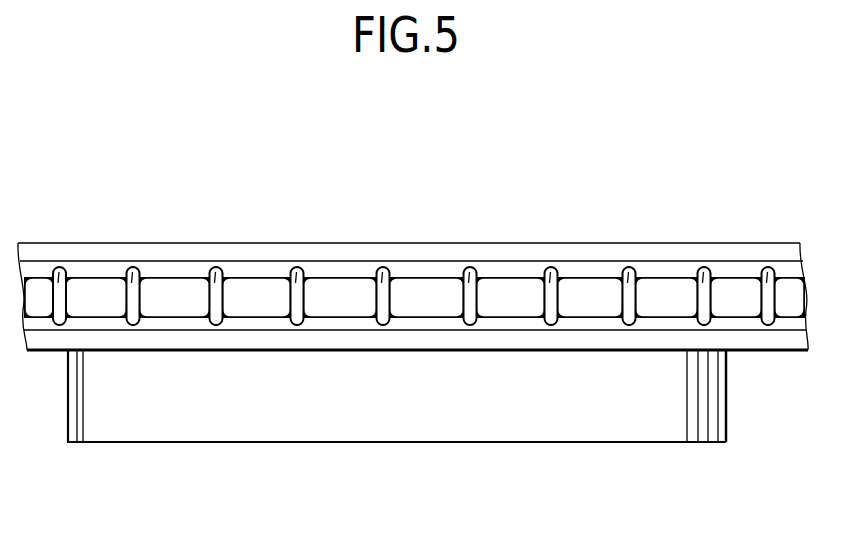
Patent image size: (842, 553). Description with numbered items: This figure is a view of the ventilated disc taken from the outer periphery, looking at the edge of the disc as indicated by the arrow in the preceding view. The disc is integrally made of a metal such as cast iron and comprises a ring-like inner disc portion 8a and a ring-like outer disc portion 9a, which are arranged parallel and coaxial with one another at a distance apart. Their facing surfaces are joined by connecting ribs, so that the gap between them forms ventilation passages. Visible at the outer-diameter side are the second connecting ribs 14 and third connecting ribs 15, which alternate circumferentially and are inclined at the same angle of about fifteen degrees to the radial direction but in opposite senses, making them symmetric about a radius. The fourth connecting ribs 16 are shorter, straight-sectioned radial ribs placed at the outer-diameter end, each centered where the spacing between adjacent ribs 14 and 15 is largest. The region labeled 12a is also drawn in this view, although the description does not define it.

The inner disc portion 8a is at (244, 335).
The outer disc portion 9a is at (332, 256).
The lower block / heat receiving portion 12a is at (433, 410).
The second connecting rib 14 is at (216, 267).
The third connecting rib 15 is at (133, 267).
The fourth connecting rib 16 is at (60, 267).